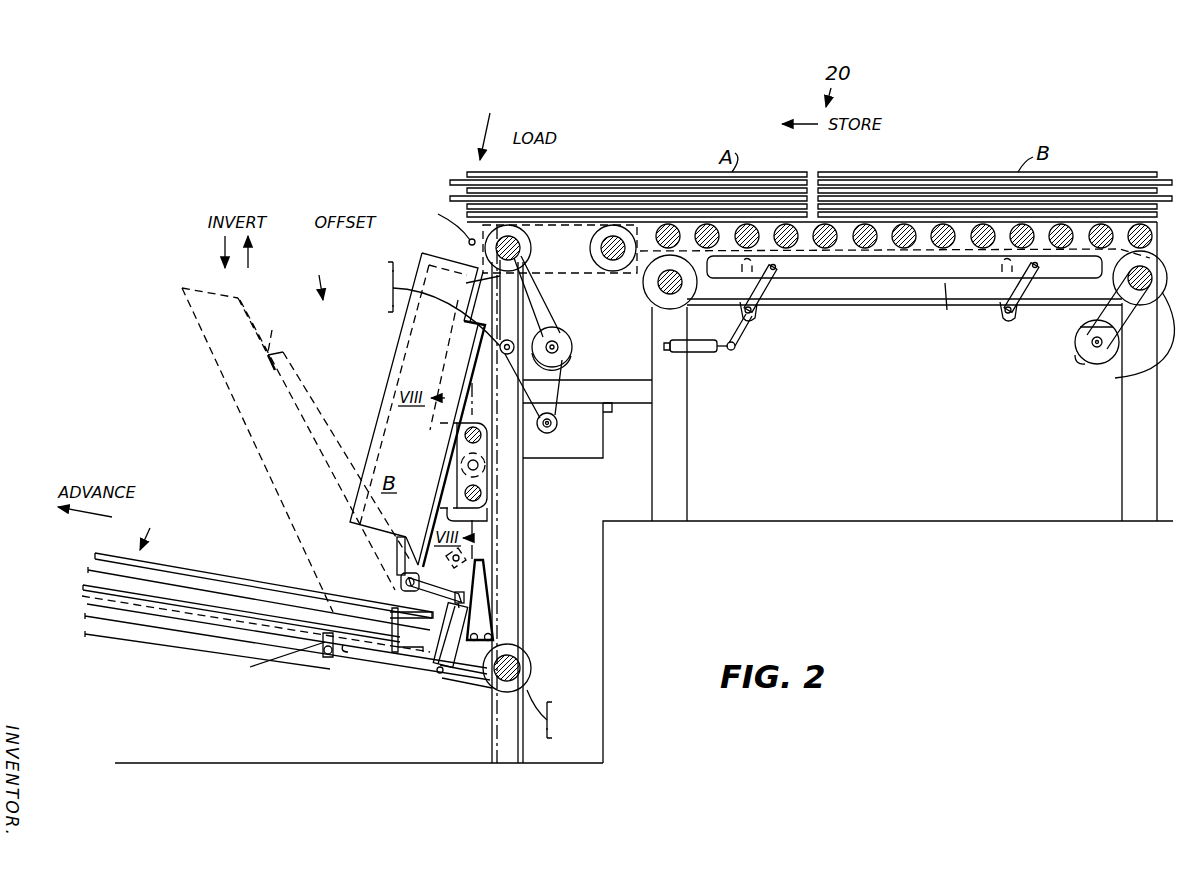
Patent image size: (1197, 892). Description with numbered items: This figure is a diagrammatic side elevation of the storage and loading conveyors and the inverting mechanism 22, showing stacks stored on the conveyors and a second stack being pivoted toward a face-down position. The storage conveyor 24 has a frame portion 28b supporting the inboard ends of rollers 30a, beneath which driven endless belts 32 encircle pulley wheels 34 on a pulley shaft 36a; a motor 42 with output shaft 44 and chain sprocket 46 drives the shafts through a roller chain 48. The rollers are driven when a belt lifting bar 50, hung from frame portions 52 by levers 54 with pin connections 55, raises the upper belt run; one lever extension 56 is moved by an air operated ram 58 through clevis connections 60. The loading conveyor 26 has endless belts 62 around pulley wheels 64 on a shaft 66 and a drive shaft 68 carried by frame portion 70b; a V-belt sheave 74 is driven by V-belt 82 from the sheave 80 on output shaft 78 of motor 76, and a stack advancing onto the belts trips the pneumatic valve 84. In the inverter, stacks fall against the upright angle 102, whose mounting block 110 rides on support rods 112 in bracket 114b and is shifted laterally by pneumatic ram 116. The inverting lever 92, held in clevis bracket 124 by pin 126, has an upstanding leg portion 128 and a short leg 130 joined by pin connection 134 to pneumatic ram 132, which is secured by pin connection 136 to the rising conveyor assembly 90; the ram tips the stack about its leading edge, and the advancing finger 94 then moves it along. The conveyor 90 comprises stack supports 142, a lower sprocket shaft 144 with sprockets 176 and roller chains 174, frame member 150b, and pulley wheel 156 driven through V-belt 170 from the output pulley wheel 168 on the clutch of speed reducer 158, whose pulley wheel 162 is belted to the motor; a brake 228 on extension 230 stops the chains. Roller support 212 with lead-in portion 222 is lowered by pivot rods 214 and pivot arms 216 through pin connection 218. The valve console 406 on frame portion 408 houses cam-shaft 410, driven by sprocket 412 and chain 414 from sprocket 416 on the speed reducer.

The inverting mechanism 22 is at (312, 275).
The storage conveyor 24 is at (963, 164).
The loading conveyor 26 is at (614, 166).
The frame portion 28b is at (650, 232).
The rollers 30a is at (908, 244).
The driven endless belts 32 is at (868, 305).
The pulley wheels 34 is at (696, 287).
The pulley shaft 36a is at (662, 294).
The motor 42 is at (1077, 360).
The output shaft 44 is at (1090, 345).
The chain sprocket 46 is at (1076, 327).
The roller chain 48 is at (1119, 313).
The belt lifting bar 50 is at (948, 283).
The frame portions 52 is at (768, 316).
The levers 54 is at (767, 285).
The pin connections 55 is at (778, 267).
The extension 56 is at (748, 338).
The air operated ram 58 is at (713, 354).
The clevis connections 60 is at (679, 356).
The endless belts 62 is at (587, 275).
The pulley wheels 64 is at (583, 242).
The shaft 66 is at (601, 258).
The drive shaft 68 is at (467, 285).
The frame portion 70b is at (525, 754).
The V-belt sheave 74 is at (500, 252).
The motor 76 is at (573, 344).
The output shaft 78 is at (556, 337).
The V-belt sheave 80 is at (575, 364).
The V-belt 82 is at (540, 293).
The pneumatic valve 84 is at (442, 223).
The rising conveyor assembly 90 is at (151, 529).
The inverting lever 92 is at (464, 369).
The advancing finger 94 is at (486, 622).
The upright angle 102 is at (398, 335).
The mounting block 110 is at (455, 522).
The support rods 112 is at (466, 436).
The bracket 114b is at (487, 518).
The pneumatic ram 116 is at (462, 465).
The clevis bracket 124 is at (385, 592).
The pin 126 is at (406, 580).
The upstanding leg portion 128 is at (468, 352).
The short leg 130 is at (440, 593).
The pneumatic ram 132 is at (462, 612).
The pin connection 134 is at (464, 594).
The pin connection 136 is at (461, 684).
The stack supports 142 is at (160, 563).
The lower sprocket shaft 144 is at (493, 641).
The frame member 150b is at (88, 612).
The pulley wheel 156 is at (521, 668).
The speed reducer 158 is at (502, 346).
The pulley wheel 162 is at (373, 270).
The output pulley wheel 168 is at (426, 304).
The V-belt 170 is at (522, 488).
The roller chains 174 is at (202, 650).
The sprockets 176 is at (527, 680).
The roller support 212 is at (140, 600).
The pivot rods 214 is at (326, 656).
The pivot arms 216 is at (271, 661).
The pin connection 218 is at (347, 652).
The lead-in portion 222 is at (417, 654).
The brake 228 is at (559, 714).
The extension 230 is at (569, 731).
The console 406 is at (607, 430).
The frame portion 408 is at (611, 407).
The cam-shaft 410 is at (558, 423).
The sprocket 412 is at (549, 434).
The chain 414 is at (550, 387).
The sprocket 416 is at (373, 308).